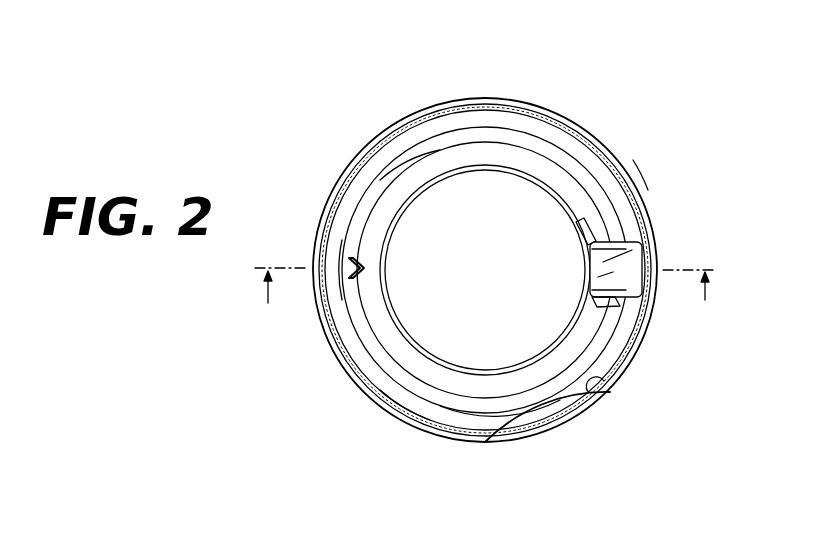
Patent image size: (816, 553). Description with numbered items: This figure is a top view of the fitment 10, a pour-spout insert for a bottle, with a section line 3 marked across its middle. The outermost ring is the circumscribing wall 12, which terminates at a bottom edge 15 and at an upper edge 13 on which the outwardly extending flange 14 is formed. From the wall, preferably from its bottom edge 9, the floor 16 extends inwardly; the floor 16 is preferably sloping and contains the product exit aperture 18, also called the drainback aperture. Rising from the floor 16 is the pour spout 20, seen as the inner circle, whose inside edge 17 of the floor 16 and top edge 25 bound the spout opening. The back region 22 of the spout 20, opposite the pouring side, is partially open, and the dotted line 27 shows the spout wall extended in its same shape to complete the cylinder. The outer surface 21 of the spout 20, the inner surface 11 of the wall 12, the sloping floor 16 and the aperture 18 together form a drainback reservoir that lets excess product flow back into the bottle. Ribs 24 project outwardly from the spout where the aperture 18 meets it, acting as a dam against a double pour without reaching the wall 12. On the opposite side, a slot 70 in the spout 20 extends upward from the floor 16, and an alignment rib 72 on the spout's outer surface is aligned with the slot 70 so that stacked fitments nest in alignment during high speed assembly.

The fitment 10 is at (521, 84).
The pour spout 20 is at (408, 180).
The top edge of pour spout 25 is at (495, 165).
The outer surface of pour spout 21 is at (550, 176).
The dotted line 27 is at (655, 215).
The back region of spout 22 is at (601, 278).
The product exit aperture 18 is at (621, 283).
The ribs 24 is at (609, 300).
The circumscribing wall 12 is at (621, 374).
The inner surface of circumscribing wall 11 is at (589, 408).
The flange 14 is at (570, 421).
The upper edge 13 is at (545, 427).
The floor 16 is at (507, 403).
The inside edge of floor 17 is at (477, 399).
The bottom edge of circumscribing wall 9 is at (405, 396).
The bottom edge 15 is at (388, 383).
The slot 70 is at (350, 271).
The alignment rib 72 is at (357, 259).
The section line 3- 3 is at (486, 303).